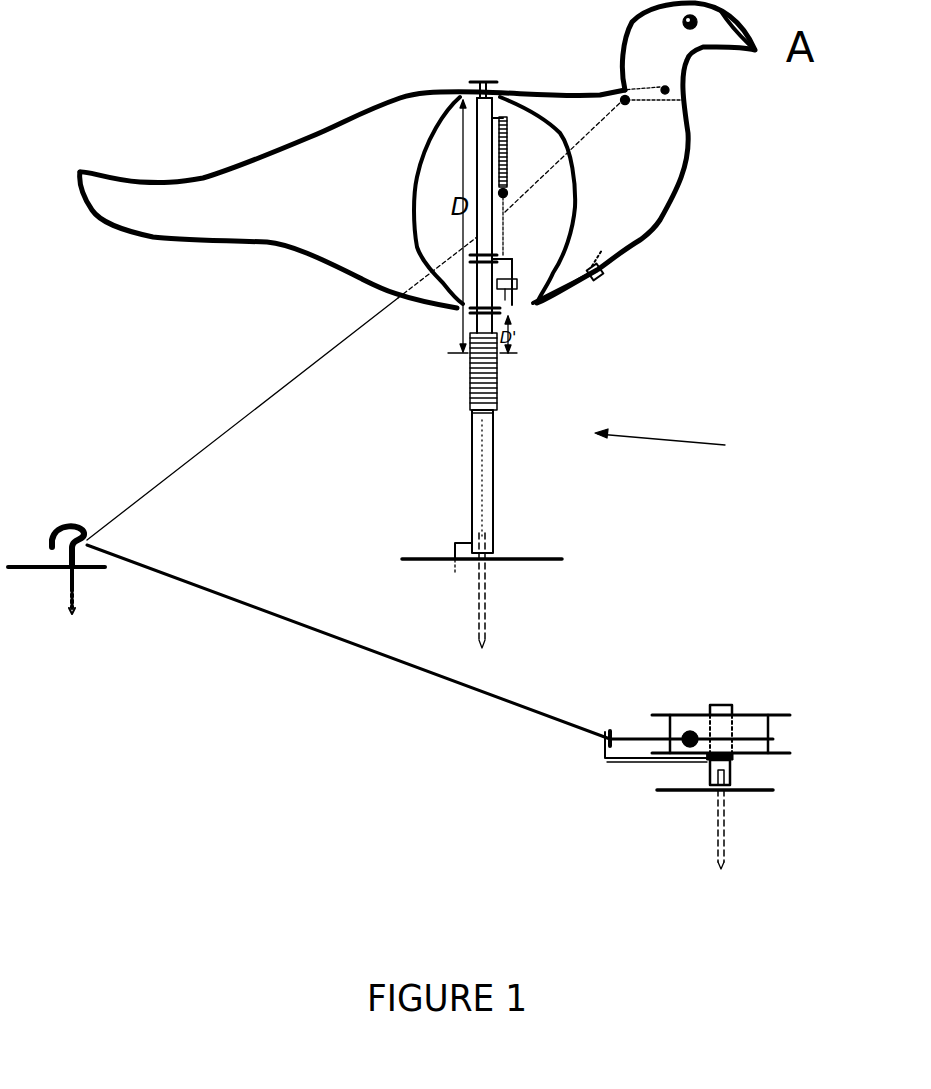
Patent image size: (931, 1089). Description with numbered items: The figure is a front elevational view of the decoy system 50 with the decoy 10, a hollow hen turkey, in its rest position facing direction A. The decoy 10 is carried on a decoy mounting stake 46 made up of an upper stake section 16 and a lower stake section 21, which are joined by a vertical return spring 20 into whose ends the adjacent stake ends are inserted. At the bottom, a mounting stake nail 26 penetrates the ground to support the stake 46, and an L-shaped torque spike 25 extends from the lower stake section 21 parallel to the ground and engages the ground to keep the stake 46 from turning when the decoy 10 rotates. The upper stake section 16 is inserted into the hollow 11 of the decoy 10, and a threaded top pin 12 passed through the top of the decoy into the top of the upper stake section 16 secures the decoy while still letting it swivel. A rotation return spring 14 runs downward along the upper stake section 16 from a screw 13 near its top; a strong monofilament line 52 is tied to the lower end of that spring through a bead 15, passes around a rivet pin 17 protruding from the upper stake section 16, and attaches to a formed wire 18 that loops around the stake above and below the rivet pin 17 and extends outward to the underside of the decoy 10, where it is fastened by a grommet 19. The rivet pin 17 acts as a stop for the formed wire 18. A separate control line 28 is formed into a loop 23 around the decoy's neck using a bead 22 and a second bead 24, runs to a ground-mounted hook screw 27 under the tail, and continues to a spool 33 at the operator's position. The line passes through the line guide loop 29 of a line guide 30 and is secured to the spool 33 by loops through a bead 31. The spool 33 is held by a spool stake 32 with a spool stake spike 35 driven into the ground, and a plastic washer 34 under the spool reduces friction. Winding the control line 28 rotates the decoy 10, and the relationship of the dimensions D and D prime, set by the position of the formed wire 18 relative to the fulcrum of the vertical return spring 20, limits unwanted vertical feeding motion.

The decoy 10 is at (355, 112).
The hollow 11 is at (428, 157).
The threaded top pin 12 is at (483, 80).
The screw 13 is at (500, 112).
The rotation return spring 14 is at (508, 135).
The bead 15 is at (507, 190).
The upper stake section 16 is at (466, 126).
The rivet pin 17 is at (563, 295).
The formed wire 18 is at (520, 317).
The grommet 19 is at (603, 275).
The vertical return spring 20 is at (497, 362).
The lower stake section 21 is at (493, 497).
The bead 22 is at (670, 90).
The loop 23 is at (640, 105).
The second bead 24 is at (627, 100).
The L-shaped torque spike 25 is at (455, 547).
The mounting stake nail 26 is at (488, 608).
The hook screw 27 is at (70, 530).
The control line 28 is at (410, 668).
The line guide loop 29 is at (609, 735).
The line guide 30 is at (612, 765).
The bead 31 is at (688, 732).
The spool stake 32 is at (722, 705).
The spool 33 is at (757, 712).
The plastic washer 34 is at (733, 758).
The spool stake spike 35 is at (717, 820).
The decoy mounting stake 46 is at (472, 442).
The decoy system 50 is at (689, 445).
The monofilament line 52 is at (505, 228).